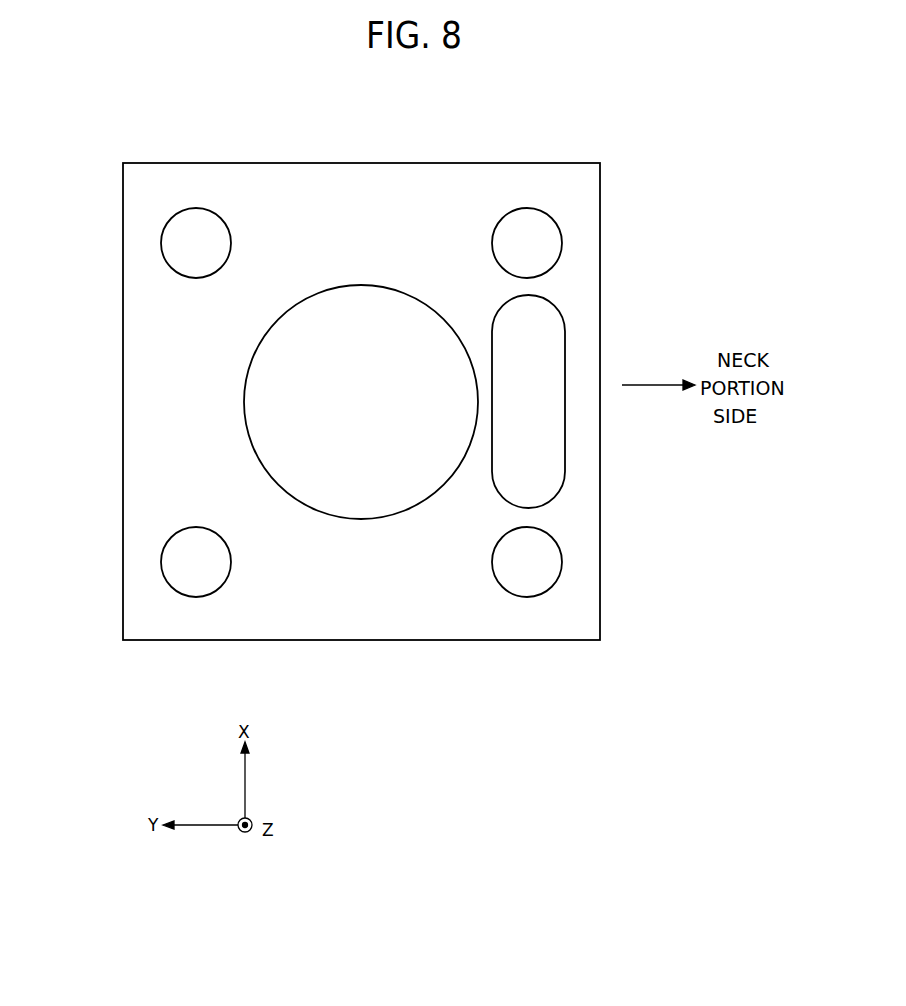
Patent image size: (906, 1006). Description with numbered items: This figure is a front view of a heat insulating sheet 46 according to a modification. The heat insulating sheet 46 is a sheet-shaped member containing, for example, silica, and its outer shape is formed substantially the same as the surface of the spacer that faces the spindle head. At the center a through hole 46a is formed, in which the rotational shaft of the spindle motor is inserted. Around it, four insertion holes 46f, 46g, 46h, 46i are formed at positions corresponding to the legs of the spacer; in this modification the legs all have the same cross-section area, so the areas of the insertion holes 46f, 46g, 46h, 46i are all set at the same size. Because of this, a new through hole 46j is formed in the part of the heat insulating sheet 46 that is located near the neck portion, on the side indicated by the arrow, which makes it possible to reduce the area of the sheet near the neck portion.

The heat insulating sheet 46 is at (533, 146).
The through hole 46a is at (343, 290).
The insertion hole 46f is at (542, 588).
The insertion hole 46g is at (542, 217).
The insertion hole 46h is at (178, 588).
The insertion hole 46i is at (178, 217).
The through hole 46j is at (562, 414).